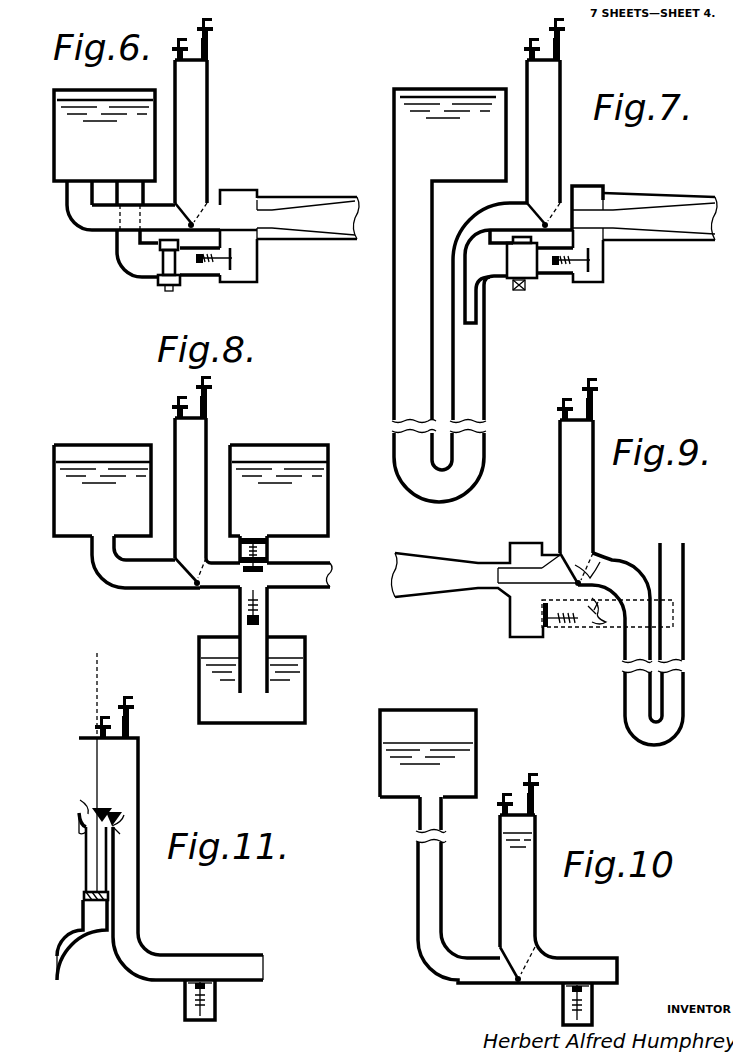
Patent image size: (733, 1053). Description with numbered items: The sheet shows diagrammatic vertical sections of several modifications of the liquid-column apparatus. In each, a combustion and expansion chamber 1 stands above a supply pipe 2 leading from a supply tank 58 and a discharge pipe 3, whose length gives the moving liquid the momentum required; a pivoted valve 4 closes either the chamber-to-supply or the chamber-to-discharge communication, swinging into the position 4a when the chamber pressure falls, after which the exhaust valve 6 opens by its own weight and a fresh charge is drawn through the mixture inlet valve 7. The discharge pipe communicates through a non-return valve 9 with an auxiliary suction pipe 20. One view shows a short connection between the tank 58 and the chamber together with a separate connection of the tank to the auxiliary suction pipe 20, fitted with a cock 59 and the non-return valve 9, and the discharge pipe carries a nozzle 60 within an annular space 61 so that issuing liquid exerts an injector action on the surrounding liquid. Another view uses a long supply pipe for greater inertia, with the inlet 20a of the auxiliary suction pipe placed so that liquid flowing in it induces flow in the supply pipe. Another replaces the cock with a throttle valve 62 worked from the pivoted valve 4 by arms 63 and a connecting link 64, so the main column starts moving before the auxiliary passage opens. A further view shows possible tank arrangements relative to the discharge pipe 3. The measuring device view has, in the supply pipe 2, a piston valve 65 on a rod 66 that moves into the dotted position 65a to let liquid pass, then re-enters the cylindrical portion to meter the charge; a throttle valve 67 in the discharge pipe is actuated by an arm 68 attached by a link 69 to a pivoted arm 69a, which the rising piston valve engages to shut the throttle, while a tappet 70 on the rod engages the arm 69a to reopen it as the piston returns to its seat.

In FIG. 6, the combustion and expansion chamber 1 is at (192, 110).
In FIG. 7, the combustion and expansion chamber 1 is at (544, 110).
In FIG. 8, the combustion and expansion chamber 1 is at (191, 467).
In FIG. 9, the combustion and expansion chamber 1 is at (577, 465).
In FIG. 10, the combustion and expansion chamber 1 is at (518, 860).
In FIG. 6, the supply pipe 2 is at (143, 229).
In FIG. 7, the supply pipe 2 is at (512, 311).
In FIG. 8, the supply pipe 2 is at (146, 562).
In FIG. 9, the supply pipe 2 is at (630, 644).
In FIG. 10, the supply pipe 2 is at (517, 912).
In FIG. 11, the supply pipe 2 is at (56, 963).
In FIG. 6, the discharge pipe 3 is at (289, 239).
In FIG. 7, the discharge pipe 3 is at (645, 237).
In FIG. 8, the discharge pipe 3 is at (265, 584).
In FIG. 9, the discharge pipe 3 is at (484, 590).
In FIG. 11, the discharge pipe 3 is at (262, 966).
In FIG. 6, the pivoted valve 4 is at (191, 215).
In FIG. 7, the pivoted valve 4 is at (548, 216).
In FIG. 8, the pivoted valve 4 is at (190, 561).
In FIG. 9, the pivoted valve 4 is at (594, 548).
In FIG. 10, the pivoted valve 4 is at (506, 965).
In FIG. 10, the swung-over position of valve 4a is at (529, 969).
In FIG. 7, the exhaust valve 6 is at (607, 205).
In FIG. 8, the exhaust valve 6 is at (174, 428).
In FIG. 10, the exhaust valve 6 is at (499, 823).
In FIG. 8, the mixture inlet valve 7 is at (213, 405).
In FIG. 10, the mixture inlet valve 7 is at (537, 806).
In FIG. 6, the non-return valve 9 is at (234, 261).
In FIG. 7, the non-return valve 9 is at (581, 263).
In FIG. 9, the non-return valve 9 is at (542, 621).
In FIG. 10, the non-return valve 9 is at (571, 983).
In FIG. 11, the non-return valve 9 is at (207, 981).
In FIG. 6, the auxiliary suction pipe 20 is at (203, 274).
In FIG. 7, the auxiliary suction pipe 20 is at (553, 276).
In FIG. 10, the auxiliary suction pipe 20 is at (563, 1013).
In FIG. 11, the auxiliary suction pipe 20 is at (185, 1010).
In FIG. 7, the inlet of auxiliary suction pipe 20a is at (470, 302).
In FIG. 6, the supply tank 58 is at (104, 147).
In FIG. 7, the supply tank 58 is at (449, 295).
In FIG. 8, the supply tank 58 is at (103, 490).
In FIG. 10, the supply tank 58 is at (478, 727).
In FIG. 6, the cock 59 is at (176, 276).
In FIG. 7, the cock 59 is at (528, 281).
In FIG. 6, the nozzle 60 is at (258, 221).
In FIG. 7, the nozzle 60 is at (614, 224).
In FIG. 6, the annular space 61 is at (262, 200).
In FIG. 9, the throttle valve 62 is at (592, 611).
In FIG. 9, the arms 63 is at (585, 570).
In FIG. 9, the connecting link 64 is at (603, 598).
In FIG. 11, the piston valve 65 is at (86, 905).
In FIG. 11, the dotted position of piston valve 65a is at (80, 818).
In FIG. 11, the rod 66 is at (88, 870).
In FIG. 11, the throttle valve 67 is at (113, 835).
In FIG. 11, the arm 68 is at (118, 806).
In FIG. 11, the link 69 is at (104, 812).
In FIG. 11, the pivoted arm 69a is at (79, 800).
In FIG. 11, the tappet 70 is at (80, 836).